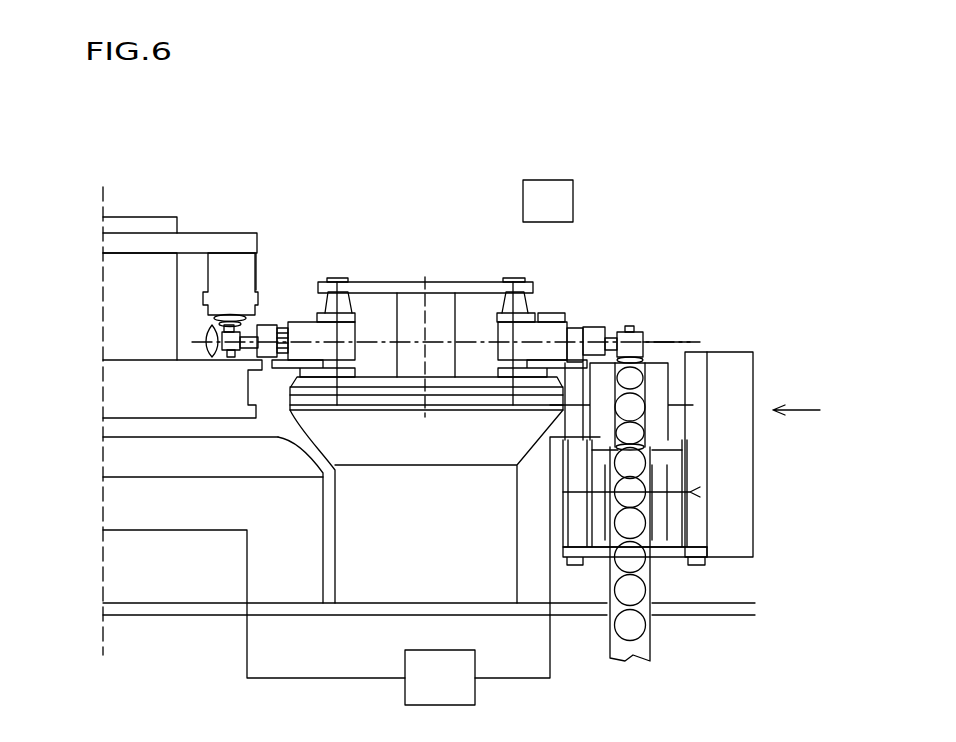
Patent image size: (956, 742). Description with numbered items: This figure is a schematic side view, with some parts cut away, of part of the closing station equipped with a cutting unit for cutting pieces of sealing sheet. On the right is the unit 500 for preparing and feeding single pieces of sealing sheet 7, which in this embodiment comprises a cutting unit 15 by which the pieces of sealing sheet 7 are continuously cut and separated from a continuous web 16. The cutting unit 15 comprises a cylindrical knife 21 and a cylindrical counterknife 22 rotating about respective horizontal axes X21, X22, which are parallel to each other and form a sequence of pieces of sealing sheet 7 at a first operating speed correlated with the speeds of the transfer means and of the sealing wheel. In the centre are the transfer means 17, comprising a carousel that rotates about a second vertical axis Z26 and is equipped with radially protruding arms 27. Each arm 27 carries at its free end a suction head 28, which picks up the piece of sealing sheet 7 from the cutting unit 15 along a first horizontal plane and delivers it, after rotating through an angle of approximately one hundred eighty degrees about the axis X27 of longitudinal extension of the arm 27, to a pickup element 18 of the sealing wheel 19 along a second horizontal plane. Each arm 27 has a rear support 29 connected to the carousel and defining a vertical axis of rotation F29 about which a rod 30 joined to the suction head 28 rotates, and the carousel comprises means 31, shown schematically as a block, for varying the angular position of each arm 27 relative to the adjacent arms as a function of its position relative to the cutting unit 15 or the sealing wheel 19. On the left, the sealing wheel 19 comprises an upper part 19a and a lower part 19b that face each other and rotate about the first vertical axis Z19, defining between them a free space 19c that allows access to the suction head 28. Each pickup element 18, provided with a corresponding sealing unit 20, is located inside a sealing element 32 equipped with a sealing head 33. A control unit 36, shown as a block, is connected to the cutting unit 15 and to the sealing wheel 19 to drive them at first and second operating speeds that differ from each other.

The first vertical axis Z19 is at (103, 205).
The sealing wheel 19 is at (167, 203).
The upper part 19a is at (118, 242).
The lower part 19b is at (123, 460).
The free space 19c is at (187, 273).
The sealing head 33 is at (217, 313).
The sealing element 32 is at (232, 267).
The pickup element 18 is at (261, 277).
The sealing unit 20 is at (205, 328).
The rear support 29 is at (366, 297).
The vertical axis of rotation F29 is at (338, 268).
The axis of longitudinal extension X27 is at (292, 322).
The second vertical axis Z26 is at (440, 317).
The means for varying the angular position 31 is at (547, 322).
The rod 30 is at (600, 325).
The arm 27 is at (612, 325).
The suction head 28 is at (645, 352).
The transfer means 17 is at (370, 553).
The control unit 36 is at (453, 691).
The cylindrical counterknife 22 is at (657, 435).
The horizontal axis X22 is at (720, 440).
The cylindrical knife 21 is at (660, 525).
The horizontal axis X21 is at (700, 495).
The piece of sealing sheet 7 is at (645, 403).
The continuous web 16 is at (642, 647).
The cutting unit 15 is at (712, 337).
The unit for preparing and feeding 500 is at (700, 320).